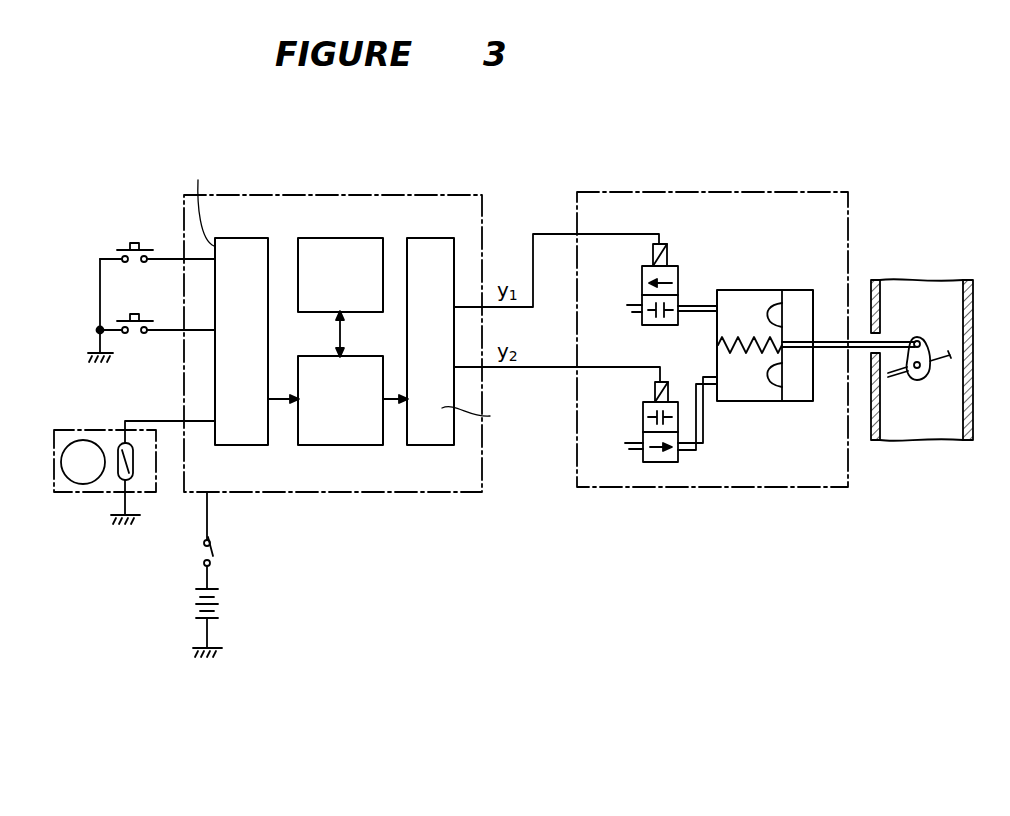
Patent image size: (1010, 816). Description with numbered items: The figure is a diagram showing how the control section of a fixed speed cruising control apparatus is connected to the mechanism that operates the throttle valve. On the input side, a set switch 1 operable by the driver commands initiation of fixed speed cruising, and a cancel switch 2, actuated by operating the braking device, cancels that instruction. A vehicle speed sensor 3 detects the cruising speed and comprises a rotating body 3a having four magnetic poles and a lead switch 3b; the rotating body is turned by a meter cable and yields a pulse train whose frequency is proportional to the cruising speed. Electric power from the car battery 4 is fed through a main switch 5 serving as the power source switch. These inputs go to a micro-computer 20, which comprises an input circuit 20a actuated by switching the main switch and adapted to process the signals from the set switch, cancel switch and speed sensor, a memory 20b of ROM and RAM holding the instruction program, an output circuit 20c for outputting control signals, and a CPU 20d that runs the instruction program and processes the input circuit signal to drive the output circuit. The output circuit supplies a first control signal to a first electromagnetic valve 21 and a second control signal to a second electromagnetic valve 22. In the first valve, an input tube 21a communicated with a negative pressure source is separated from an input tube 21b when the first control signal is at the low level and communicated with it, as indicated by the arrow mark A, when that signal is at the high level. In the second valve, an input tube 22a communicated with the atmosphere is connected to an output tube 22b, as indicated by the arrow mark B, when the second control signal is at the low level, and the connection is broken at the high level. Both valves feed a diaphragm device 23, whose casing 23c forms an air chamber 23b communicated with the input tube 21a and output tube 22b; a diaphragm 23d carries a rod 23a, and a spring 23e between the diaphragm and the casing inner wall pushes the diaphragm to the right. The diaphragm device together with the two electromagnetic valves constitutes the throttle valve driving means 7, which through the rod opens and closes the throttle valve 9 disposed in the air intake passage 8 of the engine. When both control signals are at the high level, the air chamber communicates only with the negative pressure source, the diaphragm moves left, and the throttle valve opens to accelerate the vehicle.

The set switch 1 is at (121, 247).
The cancel switch 2 is at (120, 316).
The vehicle speed sensor 3 is at (65, 493).
The rotating body 3a is at (72, 441).
The lead switch 3b is at (120, 478).
The car battery 4 is at (222, 605).
The main switch 5 is at (218, 553).
The throttle valve driving means 7 is at (700, 192).
The air intake passage 8 is at (919, 300).
The throttle valve 9 is at (950, 356).
The micro-computer 20 is at (356, 169).
The input circuit 20a is at (237, 238).
The memory 20b is at (345, 238).
The output circuit 20c is at (428, 238).
The CPU 20d is at (333, 445).
The first electromagnetic valve 21 is at (677, 268).
The input tube 21a is at (700, 310).
The input tube 21b is at (632, 313).
The second electromagnetic valve 22 is at (643, 458).
The input tube 22a is at (632, 440).
The output tube 22b is at (692, 452).
The diaphragm device 23 is at (812, 231).
The rod 23a is at (835, 342).
The air chamber 23b is at (731, 310).
The casing 23c is at (768, 401).
The diaphragm 23d is at (782, 368).
The spring 23e is at (745, 355).
The arrow mark A is at (643, 275).
The arrow mark B is at (655, 462).